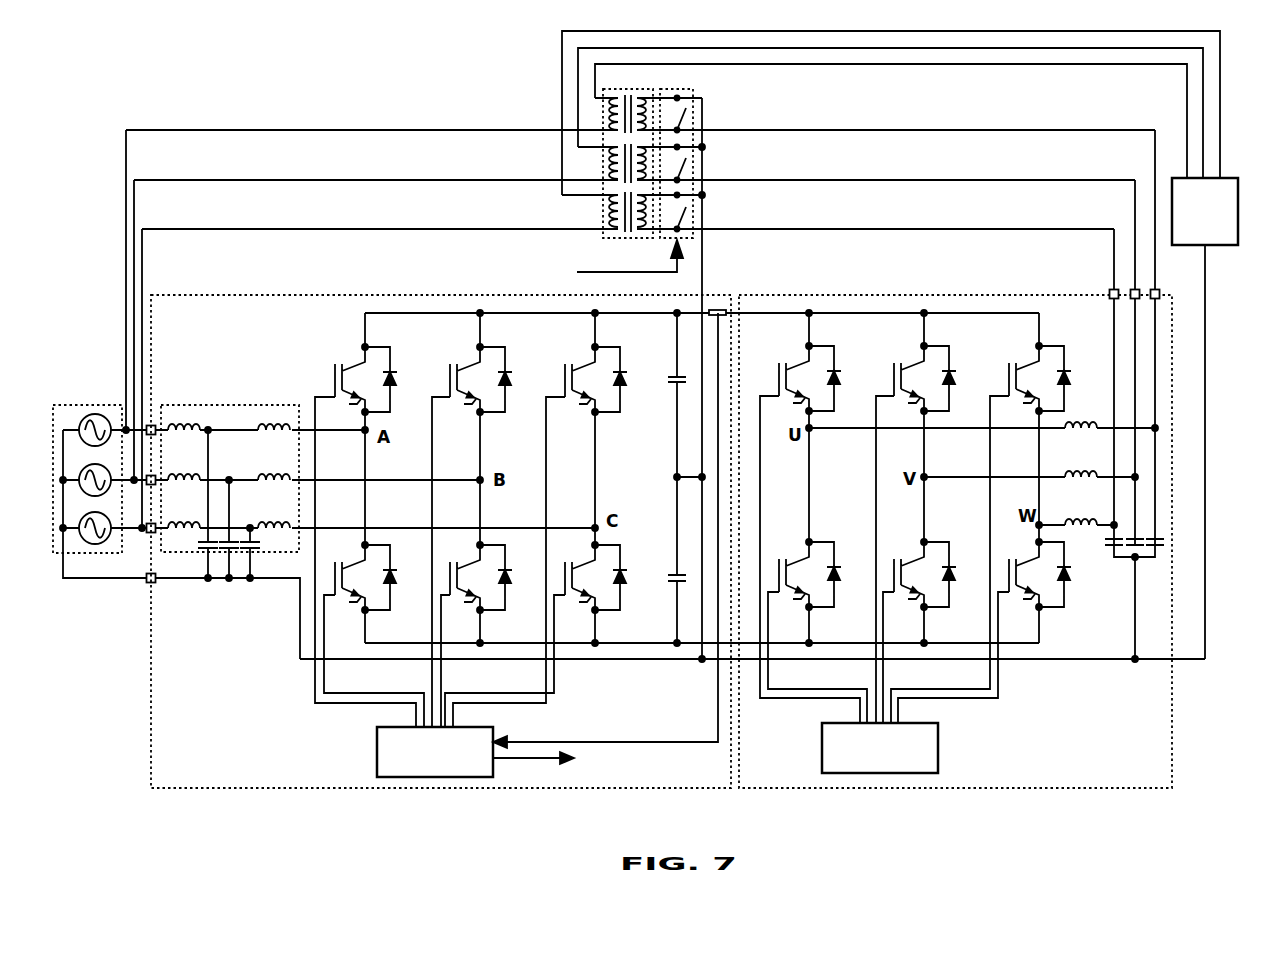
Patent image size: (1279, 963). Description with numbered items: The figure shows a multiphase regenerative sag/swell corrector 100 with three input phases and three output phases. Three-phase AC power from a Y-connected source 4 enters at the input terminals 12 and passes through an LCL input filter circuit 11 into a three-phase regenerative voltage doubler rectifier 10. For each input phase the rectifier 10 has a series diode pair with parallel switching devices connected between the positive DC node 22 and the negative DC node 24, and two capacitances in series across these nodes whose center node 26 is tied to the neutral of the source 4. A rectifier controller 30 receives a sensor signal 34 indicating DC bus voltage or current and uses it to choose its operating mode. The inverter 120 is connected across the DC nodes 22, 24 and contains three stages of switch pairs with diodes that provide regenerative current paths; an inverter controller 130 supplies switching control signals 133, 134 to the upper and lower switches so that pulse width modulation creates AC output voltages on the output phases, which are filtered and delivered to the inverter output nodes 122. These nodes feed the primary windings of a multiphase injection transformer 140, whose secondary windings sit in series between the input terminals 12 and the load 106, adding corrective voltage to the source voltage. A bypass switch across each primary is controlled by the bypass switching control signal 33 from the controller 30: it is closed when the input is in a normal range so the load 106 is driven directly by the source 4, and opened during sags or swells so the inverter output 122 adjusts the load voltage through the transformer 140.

The multiphase regenerative sag/swell corrector 100 is at (174, 81).
The AC input source 4 is at (87, 404).
The input terminals 12 is at (156, 392).
The input filter circuit 11 is at (226, 404).
The regenerative voltage doubler rectifier 10 is at (150, 745).
The positive DC node 22 is at (368, 333).
The negative DC node 24 is at (368, 627).
The center node of capacitances 26 is at (676, 465).
The rectifier controller 30 is at (376, 749).
The bypass switching control signal 33 is at (593, 271).
The sensor signal or value 34 is at (717, 713).
The multiphase injection transformer 140 is at (626, 88).
The load 106 is at (1238, 213).
The inverter output nodes 122 is at (1094, 280).
The three-phase inverter 120 is at (1173, 770).
The inverter controller 130 is at (821, 748).
The inverter switching control signal 133 is at (876, 530).
The inverter switching control signal 134 is at (993, 530).